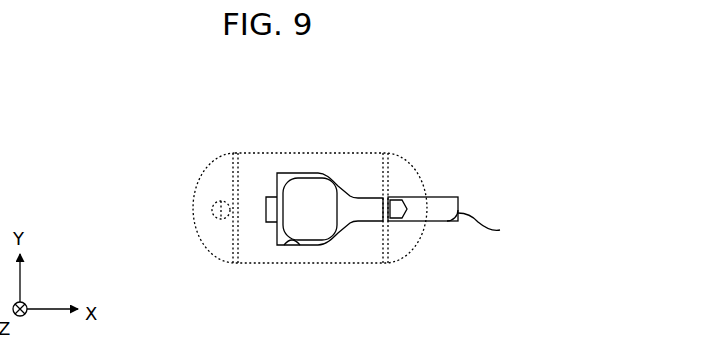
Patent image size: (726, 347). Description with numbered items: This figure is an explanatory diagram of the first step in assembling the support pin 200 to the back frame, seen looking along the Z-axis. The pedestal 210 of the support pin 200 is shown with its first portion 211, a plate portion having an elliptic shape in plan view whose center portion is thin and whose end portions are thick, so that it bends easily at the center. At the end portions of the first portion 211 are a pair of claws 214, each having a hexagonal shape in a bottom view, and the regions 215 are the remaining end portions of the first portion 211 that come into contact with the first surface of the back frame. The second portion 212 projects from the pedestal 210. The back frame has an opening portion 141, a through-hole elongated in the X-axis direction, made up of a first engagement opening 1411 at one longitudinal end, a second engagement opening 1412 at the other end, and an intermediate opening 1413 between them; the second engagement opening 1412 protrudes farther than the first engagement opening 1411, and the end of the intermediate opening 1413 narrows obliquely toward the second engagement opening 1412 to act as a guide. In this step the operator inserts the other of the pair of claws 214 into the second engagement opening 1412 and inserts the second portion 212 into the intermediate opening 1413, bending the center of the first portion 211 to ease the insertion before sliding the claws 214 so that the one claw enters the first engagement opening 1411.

The support pin 200 is at (336, 197).
The pedestal 210 is at (311, 217).
The first portion 211 is at (262, 151).
The second portion 212 is at (315, 235).
The claws 214 is at (407, 209).
The regions 215 is at (207, 173).
The opening portion 141 is at (446, 183).
The first engagement opening 1411 is at (265, 213).
The second engagement opening 1412 is at (502, 227).
The intermediate opening 1413 is at (284, 244).